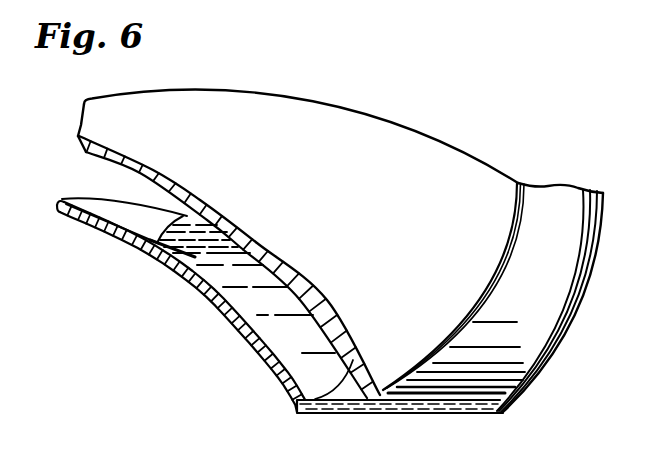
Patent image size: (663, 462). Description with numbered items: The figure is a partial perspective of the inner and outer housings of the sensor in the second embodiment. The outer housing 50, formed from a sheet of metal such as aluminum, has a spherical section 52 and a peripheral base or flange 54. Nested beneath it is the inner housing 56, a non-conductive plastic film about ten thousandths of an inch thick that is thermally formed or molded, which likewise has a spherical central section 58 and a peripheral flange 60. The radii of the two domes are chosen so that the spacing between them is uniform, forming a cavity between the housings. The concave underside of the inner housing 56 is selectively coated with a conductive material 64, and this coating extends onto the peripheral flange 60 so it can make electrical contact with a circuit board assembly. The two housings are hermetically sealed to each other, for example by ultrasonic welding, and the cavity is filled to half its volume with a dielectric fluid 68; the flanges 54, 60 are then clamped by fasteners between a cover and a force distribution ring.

The outer housing 50 is at (380, 117).
The spherical section 52 is at (462, 168).
The peripheral base or flange 54 is at (535, 345).
The inner housing 56 is at (243, 332).
The spherical central section 58 is at (296, 340).
The peripheral flange 60 is at (347, 394).
The conductive material 64 is at (214, 308).
The dielectric fluid 68 is at (140, 252).